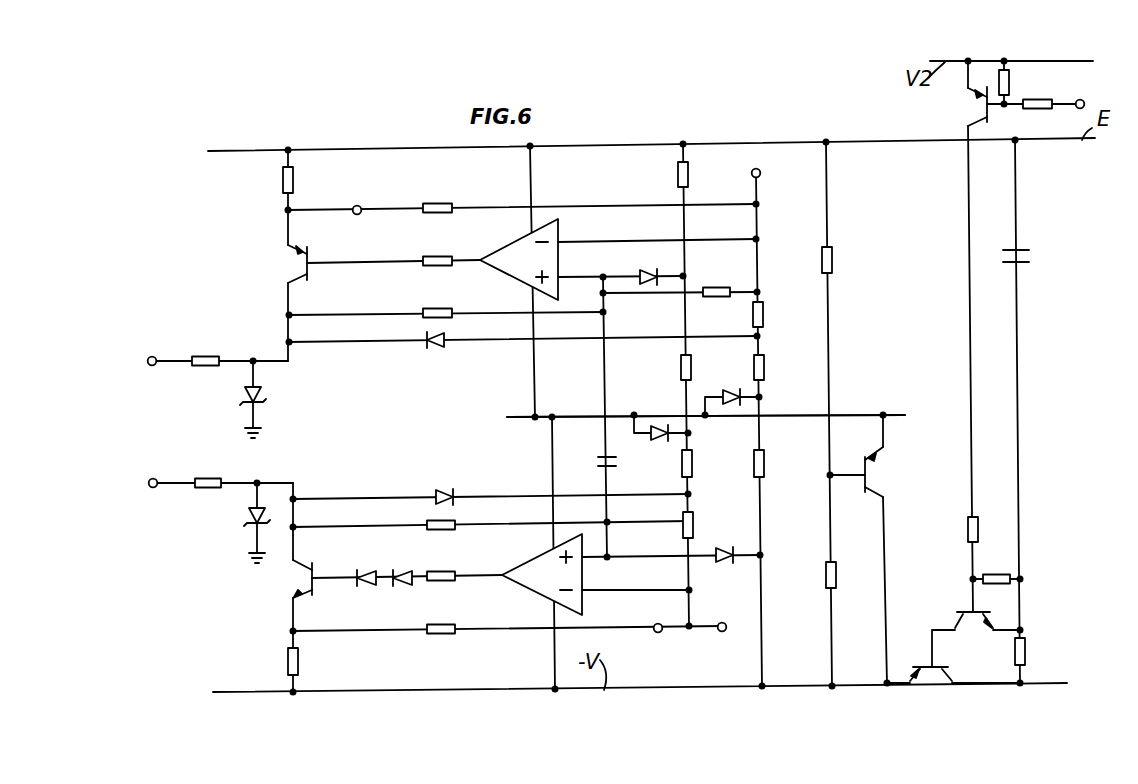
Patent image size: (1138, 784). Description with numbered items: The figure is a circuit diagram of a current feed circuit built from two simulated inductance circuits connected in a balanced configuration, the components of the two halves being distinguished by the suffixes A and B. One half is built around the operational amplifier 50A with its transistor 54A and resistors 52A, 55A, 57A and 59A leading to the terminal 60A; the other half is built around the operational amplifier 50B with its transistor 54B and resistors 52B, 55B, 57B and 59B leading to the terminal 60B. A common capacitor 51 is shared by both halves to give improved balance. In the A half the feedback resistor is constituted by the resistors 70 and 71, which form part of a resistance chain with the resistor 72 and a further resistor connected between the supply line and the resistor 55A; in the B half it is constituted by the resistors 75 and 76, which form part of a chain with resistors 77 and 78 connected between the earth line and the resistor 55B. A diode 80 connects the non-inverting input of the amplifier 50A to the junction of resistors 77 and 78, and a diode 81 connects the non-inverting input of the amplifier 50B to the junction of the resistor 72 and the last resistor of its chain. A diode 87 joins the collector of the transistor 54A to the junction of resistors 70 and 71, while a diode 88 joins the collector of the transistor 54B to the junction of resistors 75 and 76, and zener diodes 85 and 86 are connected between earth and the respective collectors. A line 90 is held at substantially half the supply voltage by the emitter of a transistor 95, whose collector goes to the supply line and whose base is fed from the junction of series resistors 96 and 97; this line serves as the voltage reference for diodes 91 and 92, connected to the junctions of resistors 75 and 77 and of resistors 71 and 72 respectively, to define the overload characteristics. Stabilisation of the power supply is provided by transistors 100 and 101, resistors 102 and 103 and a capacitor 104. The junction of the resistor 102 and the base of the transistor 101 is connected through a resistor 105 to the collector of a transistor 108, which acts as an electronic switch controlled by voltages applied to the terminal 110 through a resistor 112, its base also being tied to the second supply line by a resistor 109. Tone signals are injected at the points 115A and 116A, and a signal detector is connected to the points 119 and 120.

The resistor 57A is at (293, 180).
The point 119 is at (360, 206).
The resistor 55A is at (446, 199).
The transistor 54A is at (309, 258).
The operational amplifier 50A is at (521, 252).
The resistor 78 is at (678, 180).
The point 115A is at (761, 173).
The diode 80 is at (646, 272).
The resistor 96 is at (832, 262).
The resistor 52A is at (445, 297).
The resistor 70 is at (763, 316).
The terminal 60A is at (152, 357).
The resistor 59A is at (205, 366).
The zener diode 85 is at (259, 395).
The diode 87 is at (435, 348).
The resistor 77 is at (681, 369).
The diode 92 is at (727, 393).
The resistor 71 is at (764, 369).
The line 90 is at (848, 414).
The resistor 59B is at (204, 452).
The diode 88 is at (452, 464).
The capacitor 51 is at (601, 468).
The diode 91 is at (660, 440).
The resistor 75 is at (692, 465).
The resistor 72 is at (764, 465).
The transistor 95 is at (869, 477).
The terminal 60B is at (153, 489).
The zener diode 86 is at (249, 520).
The transistor 54B is at (314, 572).
The resistor 52B is at (440, 529).
The resistor 76 is at (683, 526).
The diode 81 is at (724, 549).
The resistor 97 is at (826, 575).
The resistor 105 is at (968, 530).
The resistor 102 is at (996, 574).
The operational amplifier 50B is at (540, 586).
The transistor 101 is at (963, 613).
The transistor 100 is at (932, 662).
The resistor 103 is at (1015, 656).
The resistor 57B is at (298, 660).
The resistor 55B is at (442, 634).
The point 120 is at (658, 633).
The point 116A is at (722, 632).
The transistor 108 is at (983, 112).
The resistor 109 is at (1009, 80).
The terminal 110 is at (1080, 99).
The resistor 112 is at (1038, 108).
The capacitor 104 is at (1008, 266).